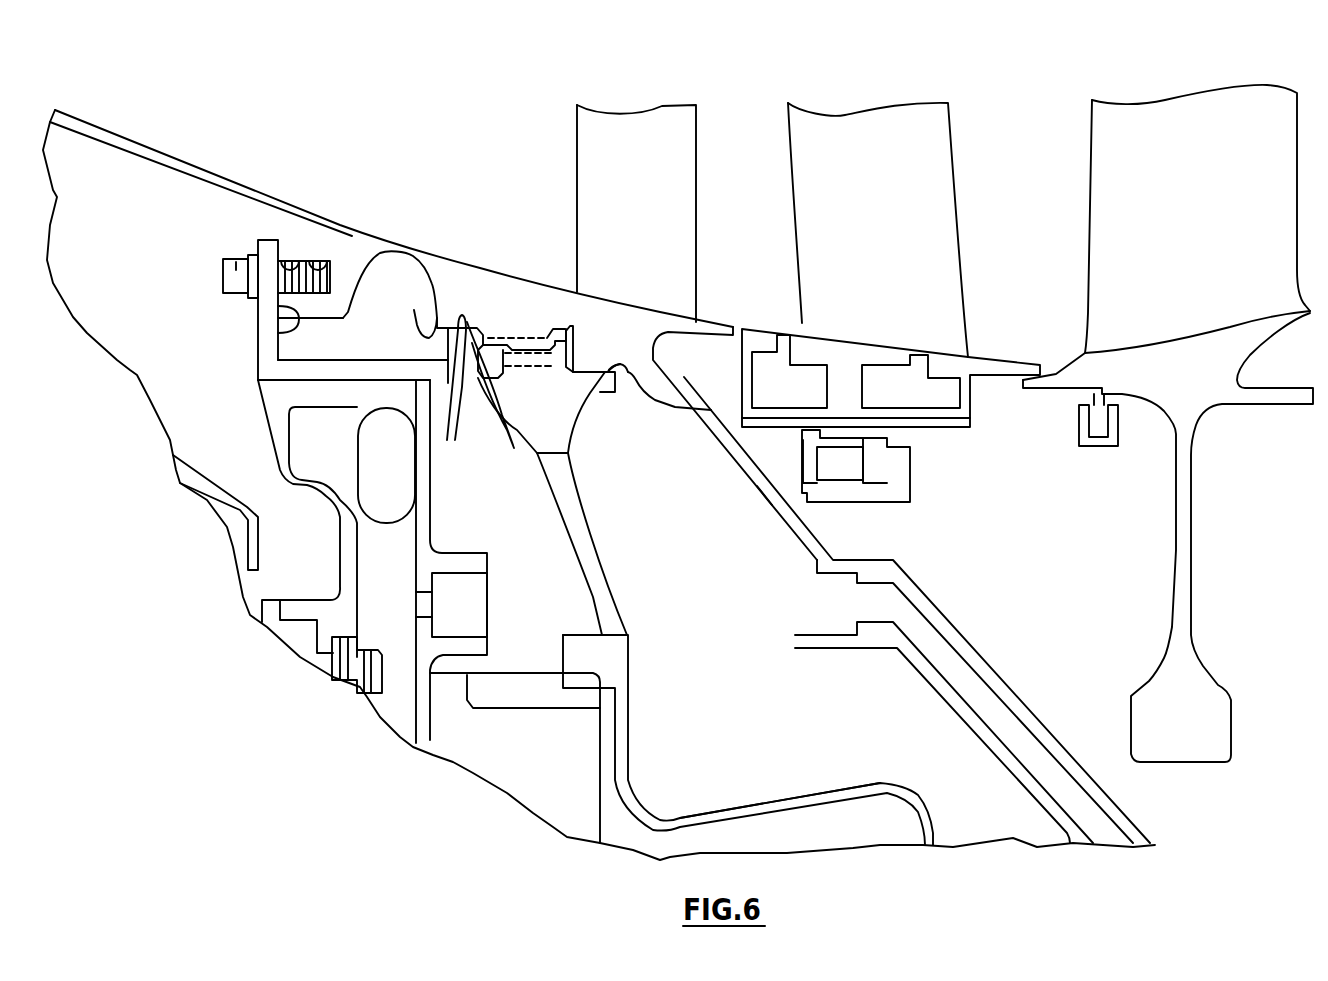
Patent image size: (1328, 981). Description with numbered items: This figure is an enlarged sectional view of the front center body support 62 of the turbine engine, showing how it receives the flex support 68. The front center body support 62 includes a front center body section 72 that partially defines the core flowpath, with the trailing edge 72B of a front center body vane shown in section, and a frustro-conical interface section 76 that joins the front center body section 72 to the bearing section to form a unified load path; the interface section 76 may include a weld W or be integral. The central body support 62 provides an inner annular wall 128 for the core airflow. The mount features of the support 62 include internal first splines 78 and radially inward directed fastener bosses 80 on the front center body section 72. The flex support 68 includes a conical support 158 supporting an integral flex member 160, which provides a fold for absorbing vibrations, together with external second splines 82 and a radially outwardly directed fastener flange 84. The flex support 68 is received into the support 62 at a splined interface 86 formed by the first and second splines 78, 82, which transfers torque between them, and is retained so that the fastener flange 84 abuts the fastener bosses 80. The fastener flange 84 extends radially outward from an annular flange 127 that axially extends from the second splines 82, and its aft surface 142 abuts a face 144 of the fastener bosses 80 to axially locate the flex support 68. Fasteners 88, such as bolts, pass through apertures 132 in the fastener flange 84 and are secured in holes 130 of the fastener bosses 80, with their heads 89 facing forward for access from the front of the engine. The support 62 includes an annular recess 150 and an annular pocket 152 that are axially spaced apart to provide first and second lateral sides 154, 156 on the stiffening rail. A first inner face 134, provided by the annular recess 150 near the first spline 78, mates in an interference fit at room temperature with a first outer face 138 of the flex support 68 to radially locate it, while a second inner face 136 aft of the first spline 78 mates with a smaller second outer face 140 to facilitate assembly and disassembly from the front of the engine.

The front center body support 62 is at (452, 136).
The flex support 68 is at (614, 603).
The front center body section 72 is at (165, 160).
The trailing edge 72B is at (697, 204).
The frustro-conical interface section 76 is at (947, 622).
The first splines 78 is at (488, 325).
The fastener bosses 80 is at (296, 252).
The second splines 82 is at (553, 350).
The fastener flange 84 is at (270, 340).
The splined interface 86 is at (526, 322).
The fasteners 88 is at (233, 262).
The heads 89 is at (232, 282).
The annular flange 127 is at (345, 372).
The inner annular wall 128 is at (407, 248).
The holes 130 is at (345, 252).
The apertures 132 is at (284, 260).
The first inner face 134 is at (419, 318).
The second inner face 136 is at (592, 372).
The first outer face 138 is at (445, 438).
The second outer face 140 is at (626, 385).
The aft surface 142 is at (277, 331).
The face 144 is at (277, 320).
The annular recess 150 is at (442, 356).
The annular pocket 152 is at (570, 320).
The first lateral side 154 is at (512, 460).
The second lateral side 156 is at (567, 326).
The conical support 158 is at (588, 535).
The flex member 160 is at (850, 792).
The weld W is at (770, 507).